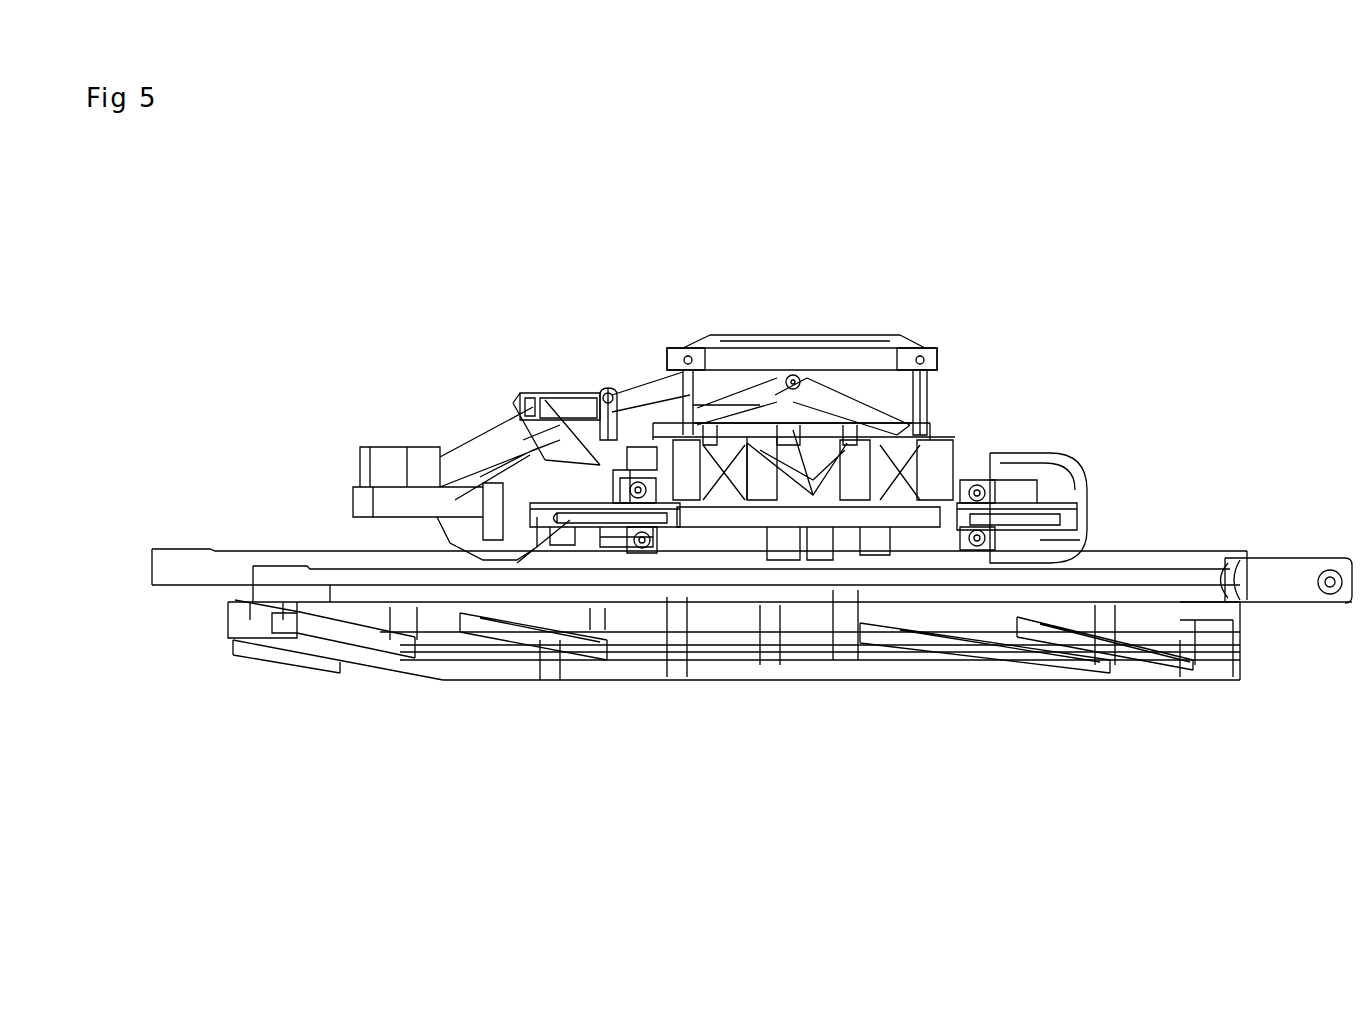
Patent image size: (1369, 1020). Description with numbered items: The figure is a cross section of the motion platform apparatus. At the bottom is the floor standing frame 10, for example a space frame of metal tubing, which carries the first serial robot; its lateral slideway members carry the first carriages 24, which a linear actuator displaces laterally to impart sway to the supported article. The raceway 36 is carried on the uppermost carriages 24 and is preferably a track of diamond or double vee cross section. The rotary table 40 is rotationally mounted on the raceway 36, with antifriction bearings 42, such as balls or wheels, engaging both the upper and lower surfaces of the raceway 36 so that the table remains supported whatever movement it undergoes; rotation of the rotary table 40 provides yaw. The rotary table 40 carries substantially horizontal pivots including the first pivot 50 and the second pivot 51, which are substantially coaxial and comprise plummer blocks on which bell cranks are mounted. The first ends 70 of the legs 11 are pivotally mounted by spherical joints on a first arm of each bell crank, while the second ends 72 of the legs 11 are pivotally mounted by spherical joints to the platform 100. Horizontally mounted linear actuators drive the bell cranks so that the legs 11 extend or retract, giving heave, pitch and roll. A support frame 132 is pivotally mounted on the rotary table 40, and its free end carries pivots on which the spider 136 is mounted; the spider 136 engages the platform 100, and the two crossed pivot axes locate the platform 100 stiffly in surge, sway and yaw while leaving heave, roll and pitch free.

The frame 10 is at (1240, 682).
The legs 11 is at (930, 402).
The first carriages 24 is at (583, 578).
The raceway 36 is at (1027, 500).
The rotary table 40 is at (512, 438).
The antifriction bearings 42 is at (630, 489).
The first pivot 50 is at (606, 385).
The second pivot 51 is at (737, 445).
The first ends of legs 70 is at (937, 445).
The second ends of legs 72 is at (932, 365).
The platform 100 is at (905, 348).
The support frame 132 is at (566, 388).
The spider 136 is at (662, 385).